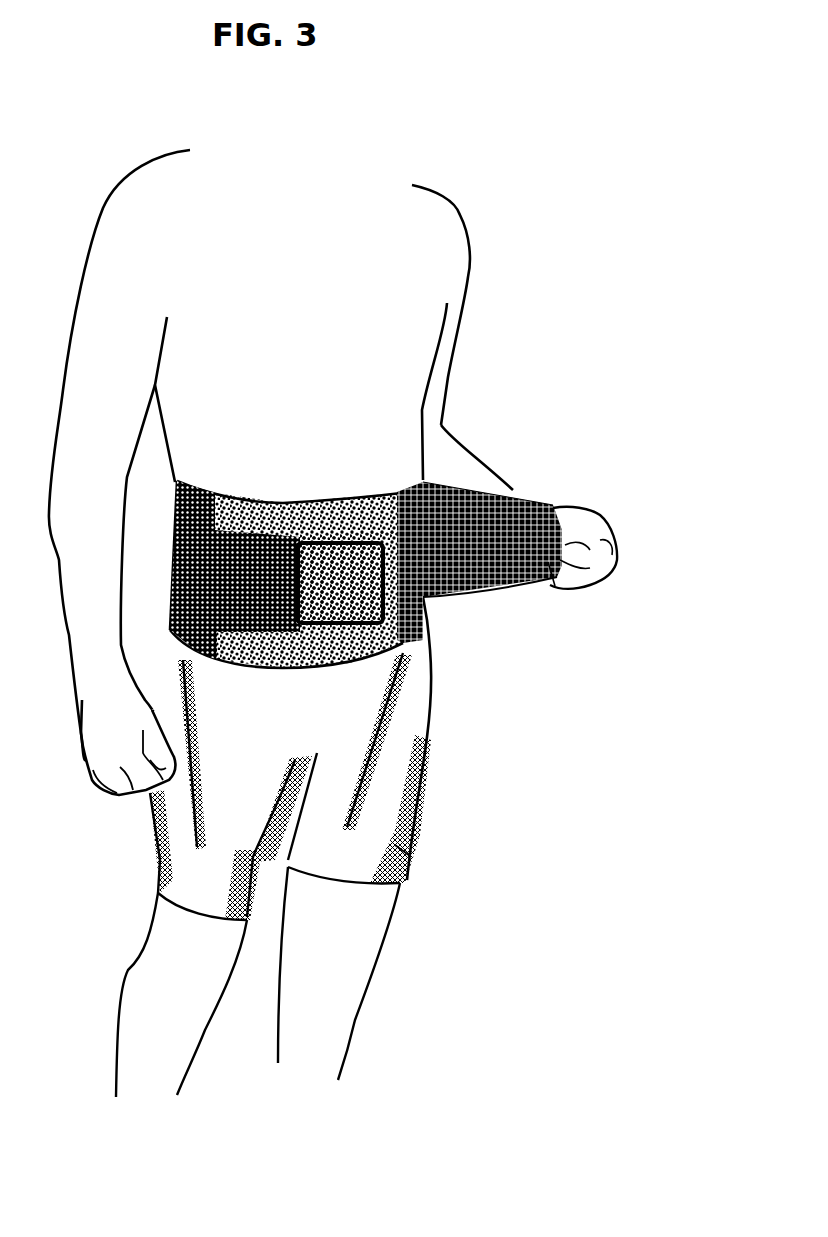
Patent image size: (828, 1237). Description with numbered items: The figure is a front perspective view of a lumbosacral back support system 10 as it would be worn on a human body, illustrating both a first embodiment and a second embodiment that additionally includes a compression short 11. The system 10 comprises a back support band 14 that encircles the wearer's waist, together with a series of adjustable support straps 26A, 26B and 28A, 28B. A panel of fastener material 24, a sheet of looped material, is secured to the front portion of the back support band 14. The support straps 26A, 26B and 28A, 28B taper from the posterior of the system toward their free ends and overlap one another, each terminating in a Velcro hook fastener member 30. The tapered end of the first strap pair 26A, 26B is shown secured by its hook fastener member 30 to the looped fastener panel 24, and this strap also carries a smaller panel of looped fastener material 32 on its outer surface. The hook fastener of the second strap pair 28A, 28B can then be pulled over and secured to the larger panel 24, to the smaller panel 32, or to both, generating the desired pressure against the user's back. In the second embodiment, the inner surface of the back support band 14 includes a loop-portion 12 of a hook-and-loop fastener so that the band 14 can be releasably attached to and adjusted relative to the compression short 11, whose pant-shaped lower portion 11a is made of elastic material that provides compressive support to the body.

The lumbosacral back support system 10 is at (614, 445).
The compression short 11 is at (423, 785).
The lower portion 11a is at (412, 848).
The loop-portion 12 is at (176, 488).
The back support band 14 is at (290, 570).
The panel of fastener material 24 is at (358, 525).
The adjustable support strap 26A is at (257, 530).
The adjustable support strap 26B is at (207, 650).
The adjustable support strap 28A is at (473, 487).
The adjustable support strap 28B is at (473, 593).
The hook fastener member 30 is at (543, 503).
The panel of looped fastener material 32 is at (342, 603).